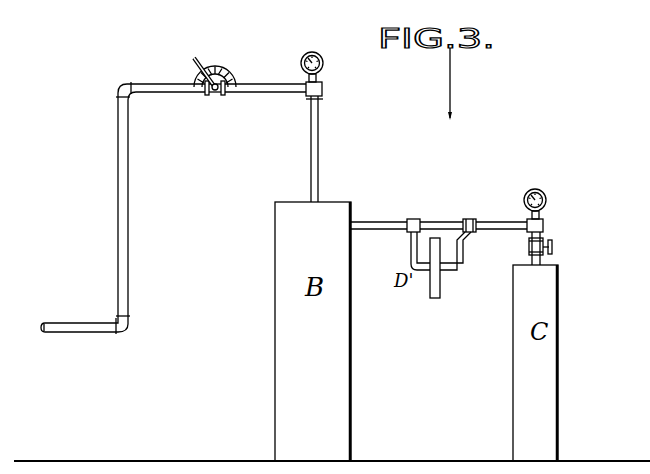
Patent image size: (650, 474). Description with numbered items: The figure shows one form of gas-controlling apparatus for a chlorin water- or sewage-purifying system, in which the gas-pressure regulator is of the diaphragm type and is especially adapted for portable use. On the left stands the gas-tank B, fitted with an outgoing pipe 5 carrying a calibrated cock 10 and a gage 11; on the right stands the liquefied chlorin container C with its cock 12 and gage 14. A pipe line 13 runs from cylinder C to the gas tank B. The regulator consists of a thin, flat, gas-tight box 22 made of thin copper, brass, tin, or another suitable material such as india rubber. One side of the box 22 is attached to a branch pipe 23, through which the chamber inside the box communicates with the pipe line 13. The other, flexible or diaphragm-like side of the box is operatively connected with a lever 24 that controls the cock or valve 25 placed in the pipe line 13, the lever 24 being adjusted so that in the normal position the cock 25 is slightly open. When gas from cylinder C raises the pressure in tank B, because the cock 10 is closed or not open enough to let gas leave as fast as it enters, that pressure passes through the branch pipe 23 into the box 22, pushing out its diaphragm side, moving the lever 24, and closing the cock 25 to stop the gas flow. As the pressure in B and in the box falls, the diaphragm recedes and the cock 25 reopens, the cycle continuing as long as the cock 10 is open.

The outgoing pipe 5 is at (319, 140).
The calibrated cock 10 is at (228, 83).
The gage 11 is at (324, 69).
The cock 12 is at (545, 244).
The pipe line 13 is at (436, 221).
The gage 14 is at (547, 206).
The gas-tight box 22 is at (441, 287).
The branch pipe 23 is at (411, 252).
The lever 24 is at (463, 252).
The cock or valve 25 is at (473, 226).